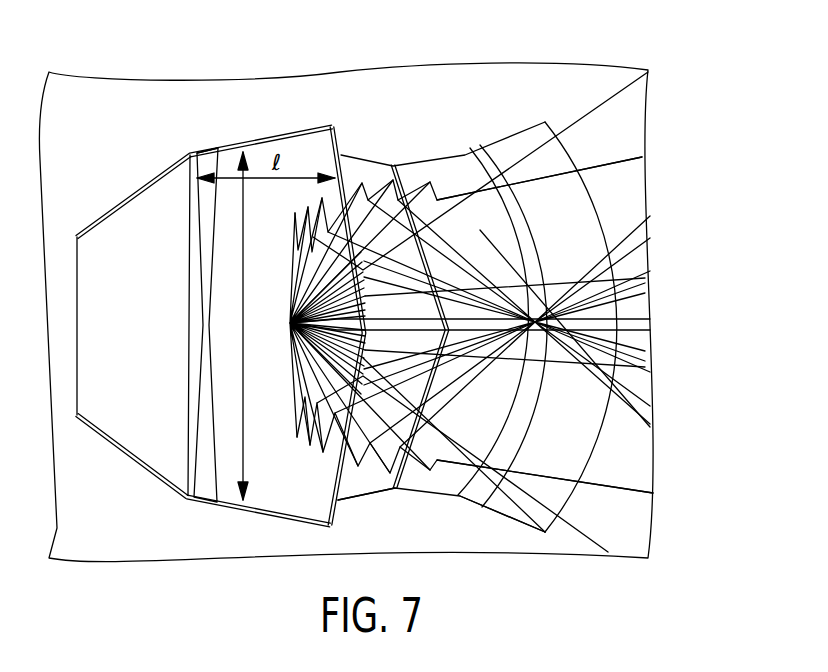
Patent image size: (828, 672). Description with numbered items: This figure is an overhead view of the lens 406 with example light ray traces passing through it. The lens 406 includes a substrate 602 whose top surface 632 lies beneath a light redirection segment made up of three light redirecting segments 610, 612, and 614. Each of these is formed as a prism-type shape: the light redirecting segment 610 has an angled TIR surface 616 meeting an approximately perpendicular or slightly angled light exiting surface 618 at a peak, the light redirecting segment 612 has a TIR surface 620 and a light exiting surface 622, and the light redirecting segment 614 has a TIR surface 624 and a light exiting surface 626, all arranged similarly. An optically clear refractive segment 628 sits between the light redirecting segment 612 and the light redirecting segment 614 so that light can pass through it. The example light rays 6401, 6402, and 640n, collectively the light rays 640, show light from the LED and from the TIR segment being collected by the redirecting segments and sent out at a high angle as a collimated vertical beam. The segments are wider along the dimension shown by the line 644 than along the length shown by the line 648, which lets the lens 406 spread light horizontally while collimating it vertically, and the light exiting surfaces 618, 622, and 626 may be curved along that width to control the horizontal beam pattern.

The lens 406 is at (525, 80).
The substrate 602 is at (603, 423).
The light redirecting segment 610 is at (147, 202).
The light redirecting segment 612 is at (257, 157).
The light redirecting segment 614 is at (437, 157).
The TIR surface 616 is at (140, 412).
The light exiting surface 618 is at (195, 467).
The TIR surface 620 is at (305, 147).
The light exiting surface 622 is at (343, 500).
The TIR surface 624 is at (460, 177).
The light exiting surface 626 is at (490, 496).
The refractive segment 628 is at (383, 163).
The top surface 632 is at (583, 213).
The light ray 640 is at (494, 286).
The light ray 6401 is at (620, 88).
The light ray 6402 is at (620, 157).
The light ray 640n is at (640, 490).
The line 644 is at (243, 377).
The line 648 is at (232, 177).